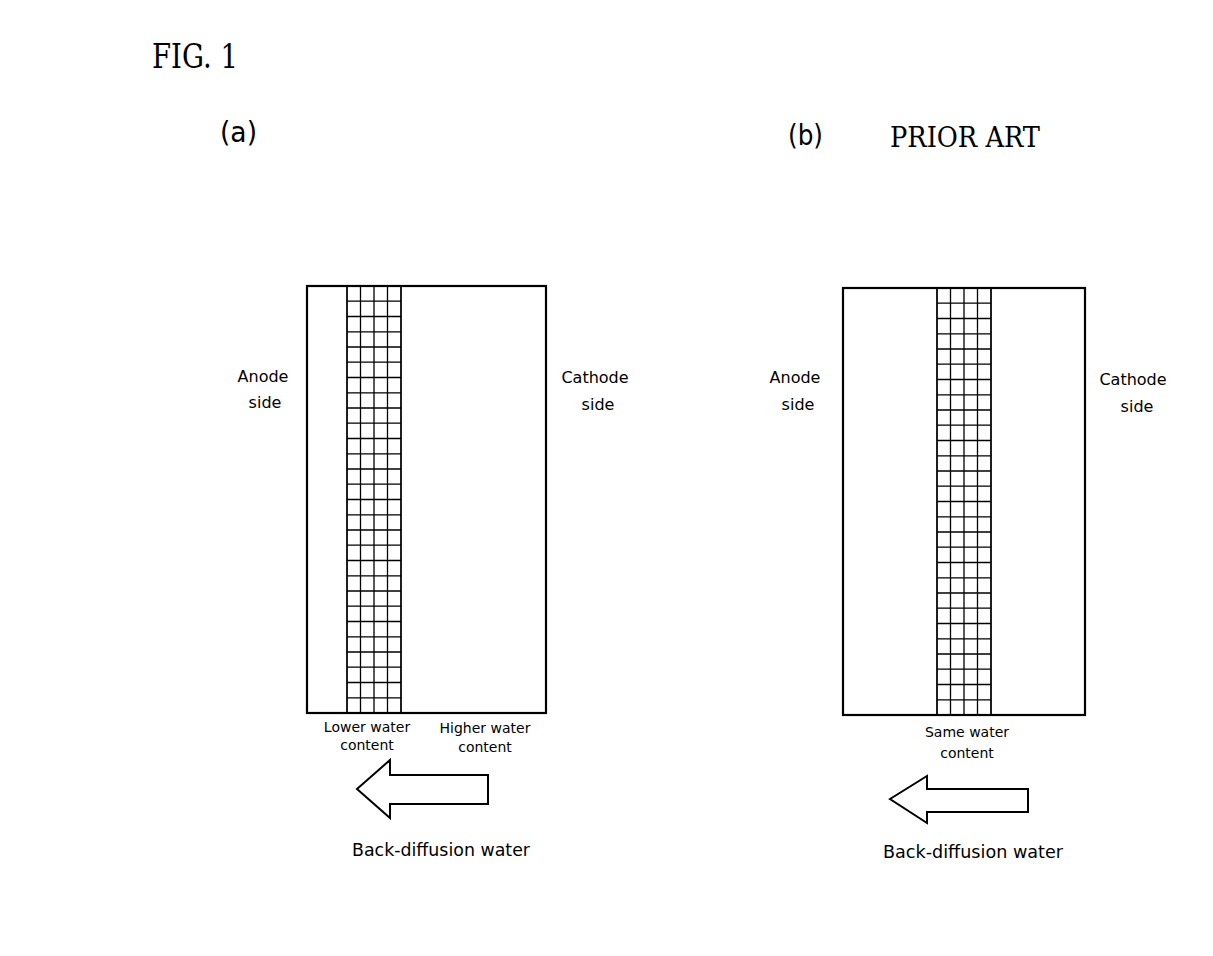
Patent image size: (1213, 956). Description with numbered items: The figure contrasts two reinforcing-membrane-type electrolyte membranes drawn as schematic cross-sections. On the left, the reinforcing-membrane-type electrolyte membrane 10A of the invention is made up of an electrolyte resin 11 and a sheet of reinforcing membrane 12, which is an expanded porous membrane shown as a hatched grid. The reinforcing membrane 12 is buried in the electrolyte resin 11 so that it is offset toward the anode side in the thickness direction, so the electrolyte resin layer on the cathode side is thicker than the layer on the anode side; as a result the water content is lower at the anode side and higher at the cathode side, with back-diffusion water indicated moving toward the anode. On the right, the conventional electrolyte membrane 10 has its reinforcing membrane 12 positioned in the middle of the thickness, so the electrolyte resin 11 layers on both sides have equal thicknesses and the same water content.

The reinforcing-membrane-type electrolyte membrane 10A is at (491, 256).
The conventional electrolyte membrane 10 is at (1042, 258).
The reinforcing membrane 12 is at (368, 292).
The electrolyte resin 11 is at (307, 570).